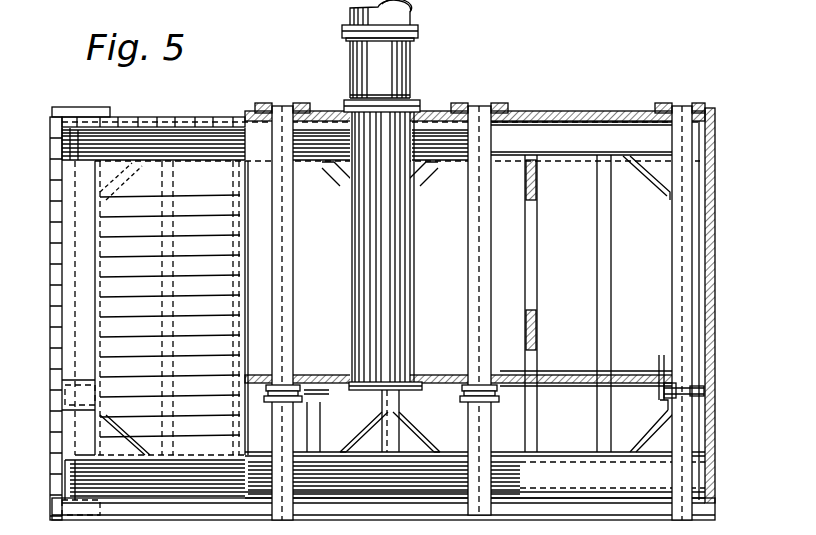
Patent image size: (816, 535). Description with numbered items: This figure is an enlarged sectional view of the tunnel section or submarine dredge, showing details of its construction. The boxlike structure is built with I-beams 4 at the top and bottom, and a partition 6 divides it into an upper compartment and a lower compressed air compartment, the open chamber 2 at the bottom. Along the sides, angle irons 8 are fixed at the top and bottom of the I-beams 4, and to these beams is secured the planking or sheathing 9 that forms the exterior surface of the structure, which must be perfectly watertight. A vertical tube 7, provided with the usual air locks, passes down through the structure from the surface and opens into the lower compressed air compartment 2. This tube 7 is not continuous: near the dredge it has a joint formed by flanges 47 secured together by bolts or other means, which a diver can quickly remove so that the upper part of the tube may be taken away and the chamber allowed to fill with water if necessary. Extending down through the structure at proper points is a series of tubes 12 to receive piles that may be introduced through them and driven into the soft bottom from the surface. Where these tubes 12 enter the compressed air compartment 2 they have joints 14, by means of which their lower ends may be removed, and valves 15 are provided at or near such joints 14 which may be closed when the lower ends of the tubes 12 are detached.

The open chamber 2 is at (325, 421).
The I-beams 4 is at (475, 475).
The partition 6 is at (560, 383).
The tube 7 is at (411, 268).
The angle irons 8 is at (538, 187).
The planking or sheathing 9 is at (55, 270).
The tubes 12 is at (680, 106).
The joints 14 is at (494, 401).
The valves 15 is at (455, 393).
The flanges 47 is at (424, 33).